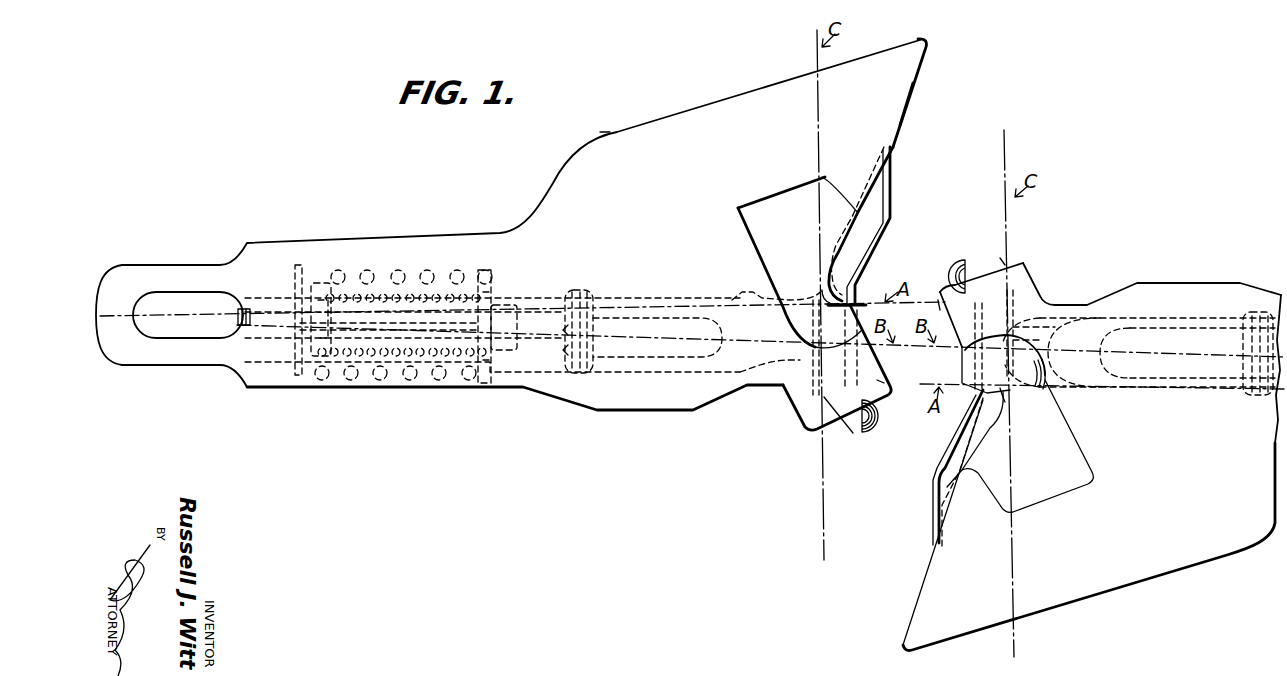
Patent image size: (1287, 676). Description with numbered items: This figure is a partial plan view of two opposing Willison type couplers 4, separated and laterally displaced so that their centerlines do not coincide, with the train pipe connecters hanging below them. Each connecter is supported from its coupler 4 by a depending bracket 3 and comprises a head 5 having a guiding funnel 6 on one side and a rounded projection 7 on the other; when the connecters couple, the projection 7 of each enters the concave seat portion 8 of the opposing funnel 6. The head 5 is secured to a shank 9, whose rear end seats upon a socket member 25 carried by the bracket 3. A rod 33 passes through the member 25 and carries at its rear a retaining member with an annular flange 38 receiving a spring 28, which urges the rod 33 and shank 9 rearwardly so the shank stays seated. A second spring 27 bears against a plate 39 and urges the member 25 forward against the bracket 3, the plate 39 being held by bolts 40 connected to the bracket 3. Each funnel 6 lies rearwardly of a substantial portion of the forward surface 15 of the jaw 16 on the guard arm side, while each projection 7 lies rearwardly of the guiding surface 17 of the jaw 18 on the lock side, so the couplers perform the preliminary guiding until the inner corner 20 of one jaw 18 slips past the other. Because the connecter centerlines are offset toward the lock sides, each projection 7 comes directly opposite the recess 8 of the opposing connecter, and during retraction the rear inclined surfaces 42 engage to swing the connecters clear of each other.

The bracket 3 is at (508, 295).
The coupler 4 is at (696, 112).
The head 5 is at (828, 290).
The guiding funnel 6 is at (872, 253).
The rounded projection 7 is at (872, 421).
The concave seat portion 8 is at (829, 258).
The shank 9 is at (634, 369).
The forward surface 15 is at (912, 83).
The jaw 16 is at (776, 348).
The guiding surface 17 is at (880, 380).
The jaw 18 is at (810, 408).
The inner corner 20 is at (968, 330).
The member 25 is at (528, 382).
The spring 27 is at (433, 262).
The spring 28 is at (419, 369).
The rod 33 is at (238, 328).
The annular flange 38 is at (324, 275).
The plate 39 is at (304, 254).
The bolts 40 is at (376, 345).
The rear inclined surfaces 42 is at (830, 420).